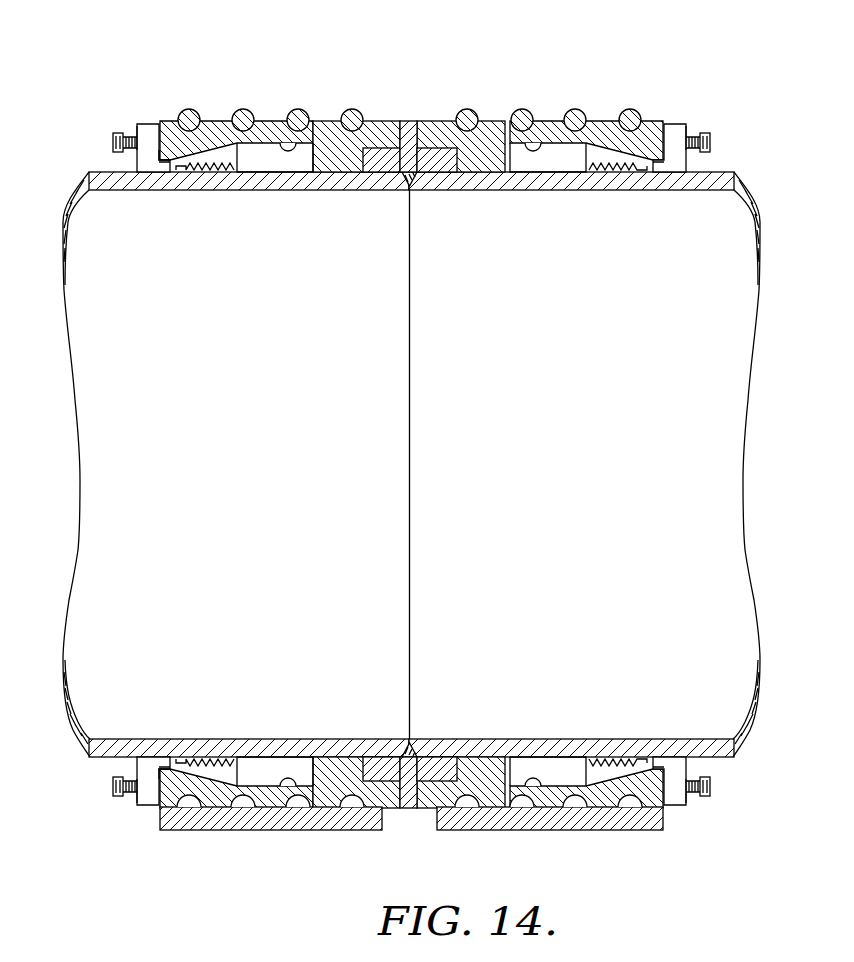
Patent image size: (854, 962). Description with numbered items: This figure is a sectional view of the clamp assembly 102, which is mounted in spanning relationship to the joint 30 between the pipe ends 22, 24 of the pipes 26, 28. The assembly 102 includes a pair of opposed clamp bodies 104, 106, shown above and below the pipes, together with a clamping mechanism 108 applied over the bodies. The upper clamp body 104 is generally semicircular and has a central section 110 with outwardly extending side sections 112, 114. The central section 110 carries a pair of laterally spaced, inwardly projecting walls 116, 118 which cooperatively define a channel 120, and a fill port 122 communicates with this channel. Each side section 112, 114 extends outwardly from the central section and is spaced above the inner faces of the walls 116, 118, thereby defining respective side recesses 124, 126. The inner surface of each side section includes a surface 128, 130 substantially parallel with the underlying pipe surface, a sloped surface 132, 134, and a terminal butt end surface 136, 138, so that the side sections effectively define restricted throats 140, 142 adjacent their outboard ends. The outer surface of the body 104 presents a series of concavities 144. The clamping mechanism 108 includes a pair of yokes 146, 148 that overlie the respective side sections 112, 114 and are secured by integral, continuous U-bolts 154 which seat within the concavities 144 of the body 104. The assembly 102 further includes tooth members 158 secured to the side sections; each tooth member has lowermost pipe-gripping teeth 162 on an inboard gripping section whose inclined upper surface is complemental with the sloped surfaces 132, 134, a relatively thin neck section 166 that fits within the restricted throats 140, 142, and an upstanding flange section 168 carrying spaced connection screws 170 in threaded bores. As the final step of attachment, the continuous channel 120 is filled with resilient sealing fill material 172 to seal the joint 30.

The pipe end 22 is at (249, 464).
The pipe end 24 is at (571, 464).
The pipe 26 is at (84, 545).
The pipe 28 is at (735, 446).
The joint 30 is at (410, 478).
The clamp assembly 102 is at (700, 55).
The clamp body 104 is at (333, 103).
The clamp body 106 is at (337, 830).
The clamping mechanism 108 is at (612, 855).
The central section 110 is at (391, 131).
The side section 112 is at (173, 121).
The side section 114 is at (648, 122).
The inwardly projecting wall 116 is at (347, 165).
The inwardly projecting wall 118 is at (495, 167).
The channel 120 is at (388, 160).
The fill port 122 is at (410, 122).
The side recess 124 is at (309, 145).
The side recess 126 is at (508, 143).
The surface substantially parallel with the pipe surface 128 is at (281, 142).
The surface substantially parallel with the pipe surface 130 is at (538, 138).
The sloped surface 132 is at (237, 157).
The sloped surface 134 is at (586, 157).
The terminal butt end surface 136 is at (157, 123).
The terminal butt end surface 138 is at (664, 122).
The restricted throat 140 is at (168, 164).
The restricted throat 142 is at (653, 152).
The concavity 144 is at (446, 118).
The yoke 146 is at (587, 830).
The yoke 148 is at (208, 828).
The U-bolt 154 is at (238, 112).
The tooth member 158 is at (130, 162).
The pipe-gripping teeth 162 is at (224, 168).
The neck section 166 is at (160, 170).
The upstanding flange section 168 is at (142, 127).
The connection screw 170 is at (110, 137).
The resilient sealing fill material 172 is at (436, 162).